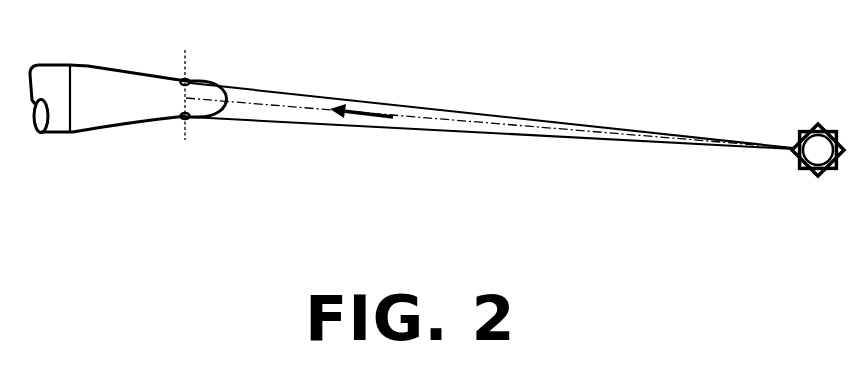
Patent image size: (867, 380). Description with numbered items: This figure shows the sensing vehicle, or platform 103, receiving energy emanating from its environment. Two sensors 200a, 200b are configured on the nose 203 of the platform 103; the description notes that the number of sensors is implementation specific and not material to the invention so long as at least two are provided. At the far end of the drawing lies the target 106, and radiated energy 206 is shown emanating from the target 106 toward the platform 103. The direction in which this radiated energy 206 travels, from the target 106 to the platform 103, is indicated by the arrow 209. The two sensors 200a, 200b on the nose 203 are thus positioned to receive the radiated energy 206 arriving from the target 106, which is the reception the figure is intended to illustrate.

The platform 103 is at (142, 92).
The target 106 is at (800, 133).
The sensor 200a is at (189, 78).
The sensor 200b is at (189, 120).
The nose 203 is at (117, 122).
The radiated energy 206 is at (442, 122).
The arrow 209 is at (370, 107).